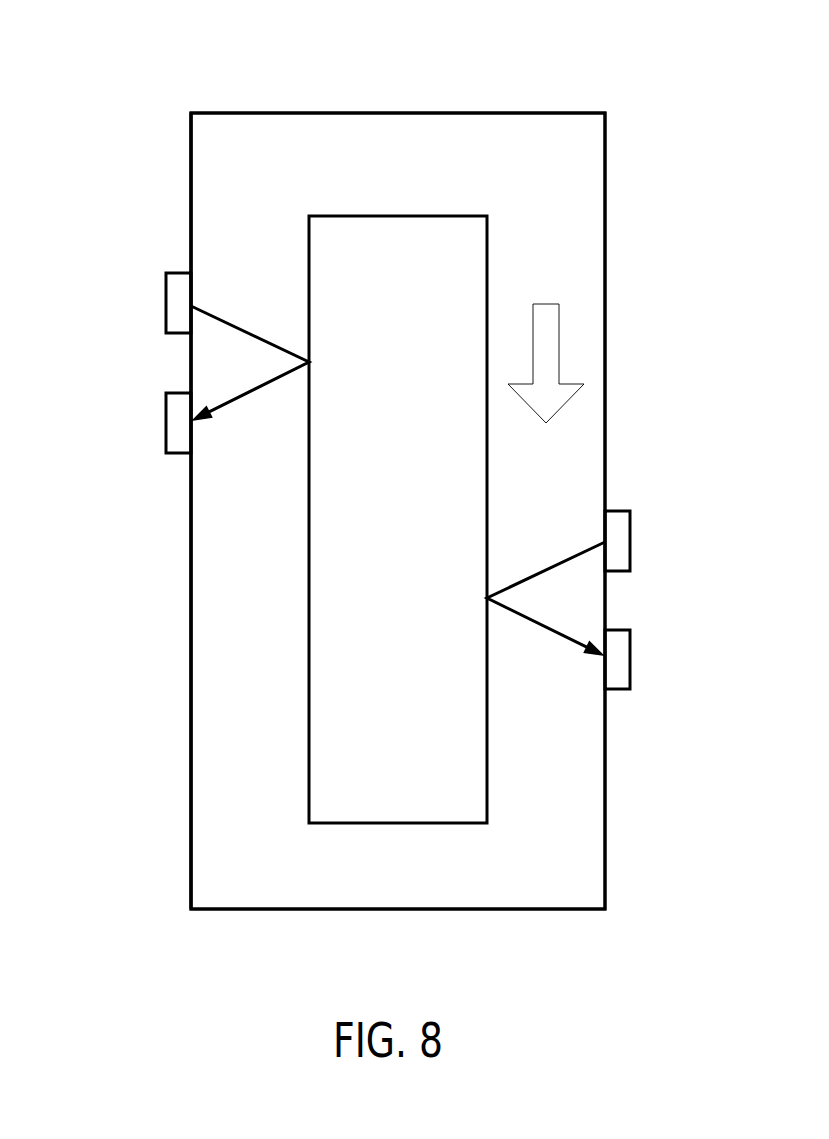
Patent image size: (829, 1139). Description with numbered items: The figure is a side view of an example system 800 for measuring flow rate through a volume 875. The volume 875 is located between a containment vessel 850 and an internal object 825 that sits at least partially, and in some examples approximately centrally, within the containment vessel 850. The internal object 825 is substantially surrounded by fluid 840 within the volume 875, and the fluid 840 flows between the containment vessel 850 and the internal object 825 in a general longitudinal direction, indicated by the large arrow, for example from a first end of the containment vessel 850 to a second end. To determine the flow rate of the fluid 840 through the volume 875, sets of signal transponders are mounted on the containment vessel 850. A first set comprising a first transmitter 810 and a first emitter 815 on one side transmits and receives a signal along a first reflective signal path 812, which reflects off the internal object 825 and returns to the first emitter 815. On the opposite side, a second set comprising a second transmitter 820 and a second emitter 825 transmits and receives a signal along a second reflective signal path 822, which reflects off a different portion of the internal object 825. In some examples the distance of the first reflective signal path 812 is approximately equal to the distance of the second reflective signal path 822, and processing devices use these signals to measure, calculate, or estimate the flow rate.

The system 800 is at (638, 77).
The first transmitter 810 is at (157, 303).
The first reflective signal path 812 is at (237, 404).
The first emitter 815 is at (157, 423).
The second transmitter 820 is at (630, 543).
The second reflective signal path 822 is at (552, 638).
The internal object 825 is at (309, 743).
The fluid 840 is at (562, 352).
The containment vessel 850 is at (191, 553).
The volume 875 is at (229, 658).